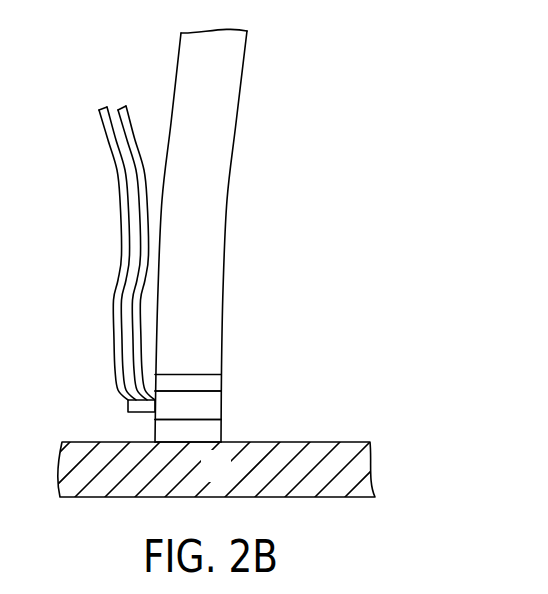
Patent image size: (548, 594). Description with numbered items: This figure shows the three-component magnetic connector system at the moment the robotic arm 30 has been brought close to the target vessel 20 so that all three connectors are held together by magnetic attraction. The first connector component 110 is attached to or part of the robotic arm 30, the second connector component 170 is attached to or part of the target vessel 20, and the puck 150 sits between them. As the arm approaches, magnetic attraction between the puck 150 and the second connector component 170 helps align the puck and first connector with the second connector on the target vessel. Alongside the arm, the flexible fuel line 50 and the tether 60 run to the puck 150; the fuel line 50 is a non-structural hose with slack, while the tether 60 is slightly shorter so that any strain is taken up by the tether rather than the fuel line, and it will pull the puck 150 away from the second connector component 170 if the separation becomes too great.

The target vessel 20 is at (226, 478).
The robotic arm 30 is at (227, 123).
The fuel line 50 is at (137, 128).
The tether 60 is at (120, 262).
The first connector component 110 is at (215, 383).
The puck 150 is at (215, 403).
The second connector component 170 is at (215, 431).